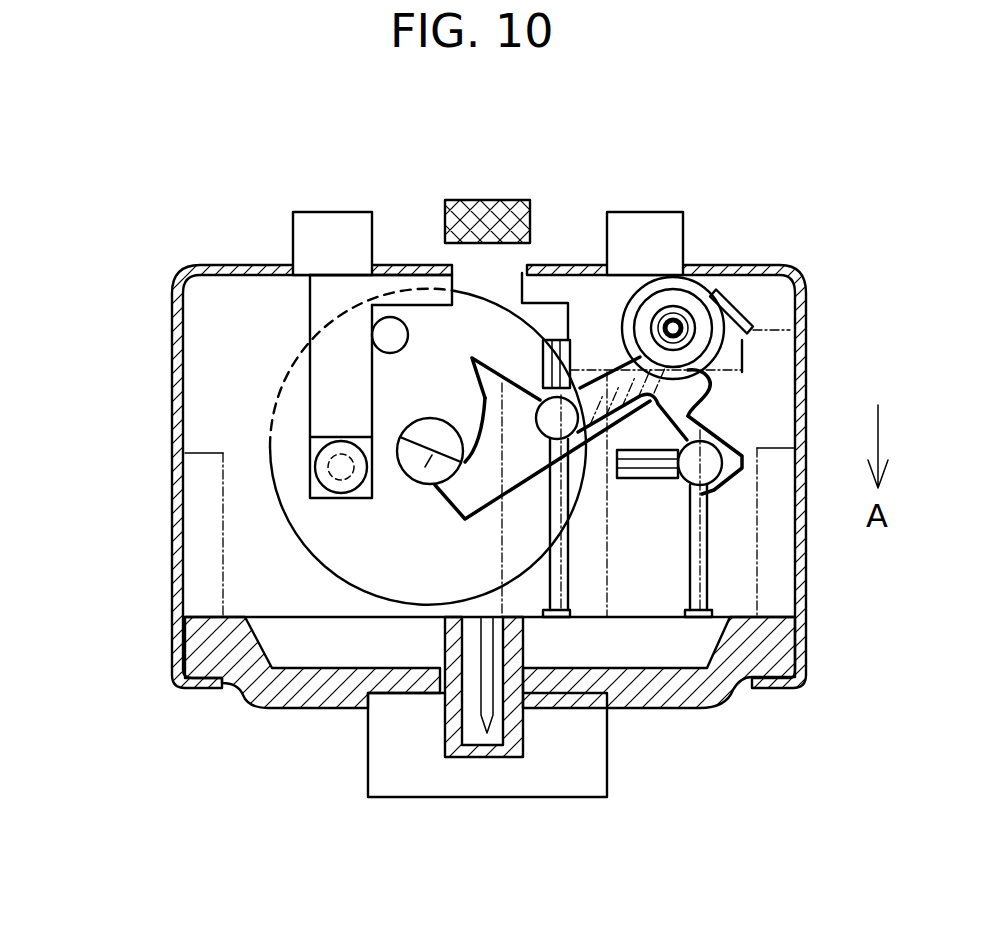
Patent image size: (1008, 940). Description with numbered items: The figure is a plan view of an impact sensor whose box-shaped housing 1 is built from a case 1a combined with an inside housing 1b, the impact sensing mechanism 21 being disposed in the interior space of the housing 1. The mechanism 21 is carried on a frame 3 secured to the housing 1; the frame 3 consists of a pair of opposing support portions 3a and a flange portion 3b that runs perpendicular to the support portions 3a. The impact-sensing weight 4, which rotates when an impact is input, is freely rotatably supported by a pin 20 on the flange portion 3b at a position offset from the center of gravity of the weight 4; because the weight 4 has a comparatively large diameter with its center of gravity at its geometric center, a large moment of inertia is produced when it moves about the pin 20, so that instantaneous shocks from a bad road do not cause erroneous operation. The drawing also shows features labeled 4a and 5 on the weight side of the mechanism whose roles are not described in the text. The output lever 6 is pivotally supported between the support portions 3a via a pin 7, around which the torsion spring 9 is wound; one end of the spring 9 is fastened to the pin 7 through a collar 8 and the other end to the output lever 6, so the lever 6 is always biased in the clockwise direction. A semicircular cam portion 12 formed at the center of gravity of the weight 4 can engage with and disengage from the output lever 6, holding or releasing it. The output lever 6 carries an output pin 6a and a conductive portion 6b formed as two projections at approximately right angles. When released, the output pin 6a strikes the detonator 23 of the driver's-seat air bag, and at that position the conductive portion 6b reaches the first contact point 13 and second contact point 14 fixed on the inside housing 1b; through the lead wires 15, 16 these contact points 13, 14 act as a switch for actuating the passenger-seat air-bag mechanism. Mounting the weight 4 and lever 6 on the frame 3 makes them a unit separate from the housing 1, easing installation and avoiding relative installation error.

The housing 1 is at (147, 386).
The case 1a is at (183, 470).
The inside housing 1b is at (197, 510).
The frame 3 is at (397, 283).
The support portions 3a is at (585, 300).
The flange portion 3b is at (327, 363).
The impact-sensing weight 4 is at (290, 413).
The cam pin 4a is at (378, 333).
The eccentric 5 is at (428, 420).
The output lever 6 is at (508, 493).
The output pin 6a is at (472, 360).
The conductive portion 6b is at (616, 430).
The pin 7 is at (682, 325).
The collar 8 is at (693, 300).
The torsion spring 9 is at (650, 283).
The semicircular cam portion 12 is at (425, 467).
The first contact point 13 is at (702, 436).
The second contact point 14 is at (540, 345).
The lead wire 15 is at (720, 512).
The lead wire 16 is at (560, 548).
The pin 20 is at (318, 480).
The impact sensing mechanism 21 is at (237, 576).
The detonator 23 is at (489, 205).